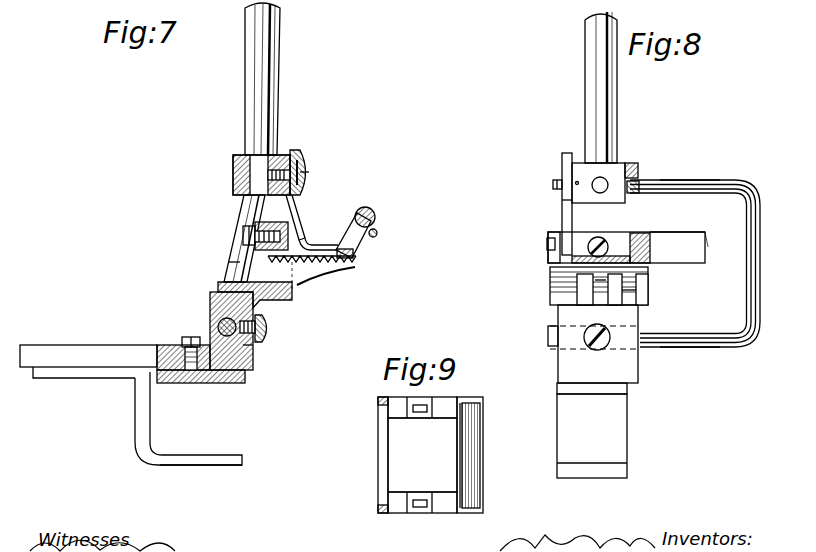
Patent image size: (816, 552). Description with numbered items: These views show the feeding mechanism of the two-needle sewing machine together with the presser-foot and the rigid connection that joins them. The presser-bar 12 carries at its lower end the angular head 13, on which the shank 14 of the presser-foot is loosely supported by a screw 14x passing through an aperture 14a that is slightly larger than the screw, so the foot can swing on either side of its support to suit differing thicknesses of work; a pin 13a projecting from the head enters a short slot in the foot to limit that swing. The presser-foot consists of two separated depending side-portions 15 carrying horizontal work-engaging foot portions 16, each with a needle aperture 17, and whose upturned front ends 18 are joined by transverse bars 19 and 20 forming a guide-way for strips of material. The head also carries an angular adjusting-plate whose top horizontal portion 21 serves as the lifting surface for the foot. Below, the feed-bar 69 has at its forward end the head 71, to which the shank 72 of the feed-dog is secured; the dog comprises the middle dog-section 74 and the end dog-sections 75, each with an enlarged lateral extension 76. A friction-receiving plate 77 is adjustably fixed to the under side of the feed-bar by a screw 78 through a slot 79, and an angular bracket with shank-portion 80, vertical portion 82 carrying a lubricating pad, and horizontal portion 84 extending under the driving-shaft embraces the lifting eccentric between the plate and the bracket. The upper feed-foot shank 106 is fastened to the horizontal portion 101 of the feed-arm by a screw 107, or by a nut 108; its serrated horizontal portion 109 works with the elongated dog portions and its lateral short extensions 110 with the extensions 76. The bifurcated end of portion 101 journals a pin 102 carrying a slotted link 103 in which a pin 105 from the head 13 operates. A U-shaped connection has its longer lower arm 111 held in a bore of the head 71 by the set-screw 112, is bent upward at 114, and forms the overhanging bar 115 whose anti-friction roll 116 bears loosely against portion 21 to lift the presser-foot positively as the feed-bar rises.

In FIG. 7, the presser-bar 12 is at (274, 80).
In FIG. 8, the presser-bar 12 is at (616, 108).
In FIG. 7, the angular head 13 is at (252, 170).
In FIG. 8, the angular head 13 is at (615, 170).
In FIG. 8, the pin 13a is at (567, 160).
In FIG. 7, the shank of the presser-foot 14 is at (292, 152).
In FIG. 9, the shank of the presser-foot 14 is at (384, 450).
In FIG. 7, the screw 14x is at (298, 163).
In FIG. 7, the aperture 14a is at (303, 176).
In FIG. 7, the depending side-portions 15 is at (342, 216).
In FIG. 9, the depending side-portions 15 is at (384, 406).
In FIG. 7, the horizontal work-engaging or foot portions 16 is at (358, 260).
In FIG. 9, the horizontal work-engaging or foot portions 16 is at (420, 413).
In FIG. 9, the needle aperture 17 is at (426, 419).
In FIG. 9, the upturned front ends 18 is at (446, 406).
In FIG. 7, the transverse bar 19 is at (379, 233).
In FIG. 9, the transverse bar 19 is at (478, 470).
In FIG. 7, the transverse bar 20 is at (376, 210).
In FIG. 9, the transverse bar 20 is at (462, 438).
In FIG. 8, the top horizontal portion of the adjusting-plate 21 is at (638, 166).
In FIG. 7, the feed-bar 69 is at (88, 356).
In FIG. 7, the head 71 is at (212, 302).
In FIG. 8, the head 71 is at (640, 372).
In FIG. 7, the shank of the feed-dog 72 is at (283, 302).
In FIG. 8, the middle dog-section 74 is at (622, 292).
In FIG. 7, the end dog-sections 75 is at (342, 279).
In FIG. 8, the end dog-sections 75 is at (572, 288).
In FIG. 8, the enlarged lateral extension 76 is at (560, 276).
In FIG. 7, the friction-receiving plate 77 is at (238, 385).
In FIG. 8, the friction-receiving plate 77 is at (628, 390).
In FIG. 7, the screw 78 is at (188, 337).
In FIG. 7, the slot 79 is at (184, 344).
In FIG. 7, the shank-portion of the angular bracket 80 is at (80, 373).
In FIG. 7, the vertical portion of the bracket 82 is at (140, 431).
In FIG. 8, the vertical portion of the bracket 82 is at (628, 430).
In FIG. 7, the horizontal portion of the bracket 84 is at (215, 467).
In FIG. 8, the horizontal portion of the bracket 84 is at (588, 468).
In FIG. 7, the horizontal portion of the feed-arm 101 is at (240, 216).
In FIG. 8, the horizontal portion of the feed-arm 101 is at (706, 254).
In FIG. 8, the pin 102 is at (548, 242).
In FIG. 8, the link 103 is at (567, 202).
In FIG. 8, the pin 105 is at (553, 184).
In FIG. 7, the shank of the upper feed-foot 106 is at (297, 215).
In FIG. 8, the shank of the upper feed-foot 106 is at (636, 245).
In FIG. 7, the screw 107 is at (302, 235).
In FIG. 8, the screw 107 is at (603, 238).
In FIG. 7, the nut 108 is at (250, 236).
In FIG. 7, the horizontal portion of the feed-foot 109 is at (340, 249).
In FIG. 8, the horizontal portion of the feed-foot 109 is at (582, 282).
In FIG. 8, the lateral short extensions 110 is at (560, 254).
In FIG. 7, the lower arm 111 is at (246, 346).
In FIG. 8, the lower arm 111 is at (710, 346).
In FIG. 7, the set-screw 112 is at (270, 336).
In FIG. 8, the set-screw 112 is at (590, 342).
In FIG. 7, the vertical portion 114 is at (247, 257).
In FIG. 8, the vertical portion 114 is at (760, 292).
In FIG. 8, the overhanging bar 115 is at (695, 182).
In FIG. 8, the anti-friction roll 116 is at (640, 186).